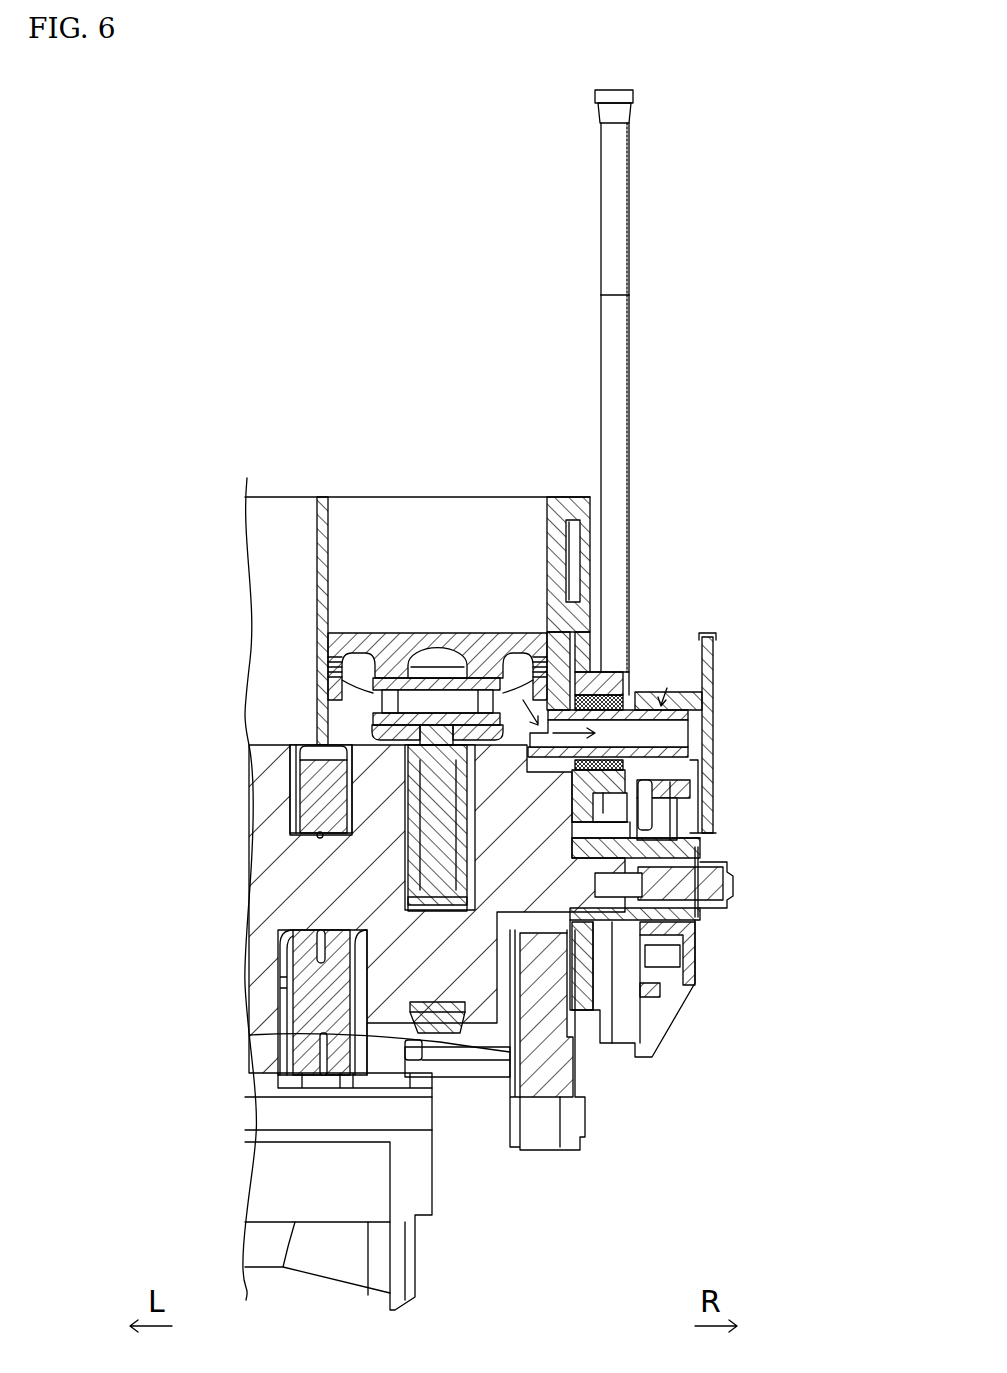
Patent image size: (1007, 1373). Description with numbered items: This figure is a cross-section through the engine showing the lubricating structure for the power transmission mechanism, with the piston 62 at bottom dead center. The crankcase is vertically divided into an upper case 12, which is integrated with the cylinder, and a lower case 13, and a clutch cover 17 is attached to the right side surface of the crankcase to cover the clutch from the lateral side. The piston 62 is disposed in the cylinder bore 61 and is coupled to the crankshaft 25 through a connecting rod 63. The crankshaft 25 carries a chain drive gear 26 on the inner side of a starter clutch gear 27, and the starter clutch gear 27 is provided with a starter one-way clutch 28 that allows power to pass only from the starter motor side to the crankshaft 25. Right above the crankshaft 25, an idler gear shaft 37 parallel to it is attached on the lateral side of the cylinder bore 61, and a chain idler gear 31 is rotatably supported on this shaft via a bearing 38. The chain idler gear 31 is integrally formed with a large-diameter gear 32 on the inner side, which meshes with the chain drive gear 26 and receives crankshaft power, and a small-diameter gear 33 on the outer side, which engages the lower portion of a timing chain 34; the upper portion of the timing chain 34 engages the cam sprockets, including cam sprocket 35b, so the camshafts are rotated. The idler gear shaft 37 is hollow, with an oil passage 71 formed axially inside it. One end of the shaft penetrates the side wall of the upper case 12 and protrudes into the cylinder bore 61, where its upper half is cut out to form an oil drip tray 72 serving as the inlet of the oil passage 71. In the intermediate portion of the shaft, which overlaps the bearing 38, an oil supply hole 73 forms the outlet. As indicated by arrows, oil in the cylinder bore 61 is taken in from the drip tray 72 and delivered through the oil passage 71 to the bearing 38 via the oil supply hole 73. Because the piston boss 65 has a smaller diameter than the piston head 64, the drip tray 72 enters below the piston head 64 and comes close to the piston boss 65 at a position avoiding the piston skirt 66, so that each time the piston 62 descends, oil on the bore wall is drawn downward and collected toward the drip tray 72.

The upper case 12 is at (567, 497).
The lower case 13 is at (560, 1097).
The clutch cover 17 is at (716, 790).
The crankshaft 25 is at (382, 985).
The chain drive gear 26 is at (582, 942).
The starter clutch gear 27 is at (652, 990).
The starter one-way clutch 28 is at (697, 950).
The chain idler gear 31 is at (703, 662).
The large-diameter gear 32 is at (556, 630).
The small-diameter gear 33 is at (692, 805).
The timing chain 34 is at (609, 340).
The cam sprocket 35b is at (607, 215).
The idler gear shaft 37 is at (702, 700).
The bearing 38 is at (607, 700).
The cylinder bore 61 is at (332, 535).
The piston 62 is at (455, 632).
The connecting rod 63 is at (430, 830).
The piston head 64 is at (365, 633).
The piston boss 65 is at (372, 725).
The piston skirt 66 is at (342, 698).
The oil passage 71 is at (650, 750).
The oil drip tray 72 is at (577, 688).
The oil supply hole 73 is at (662, 688).